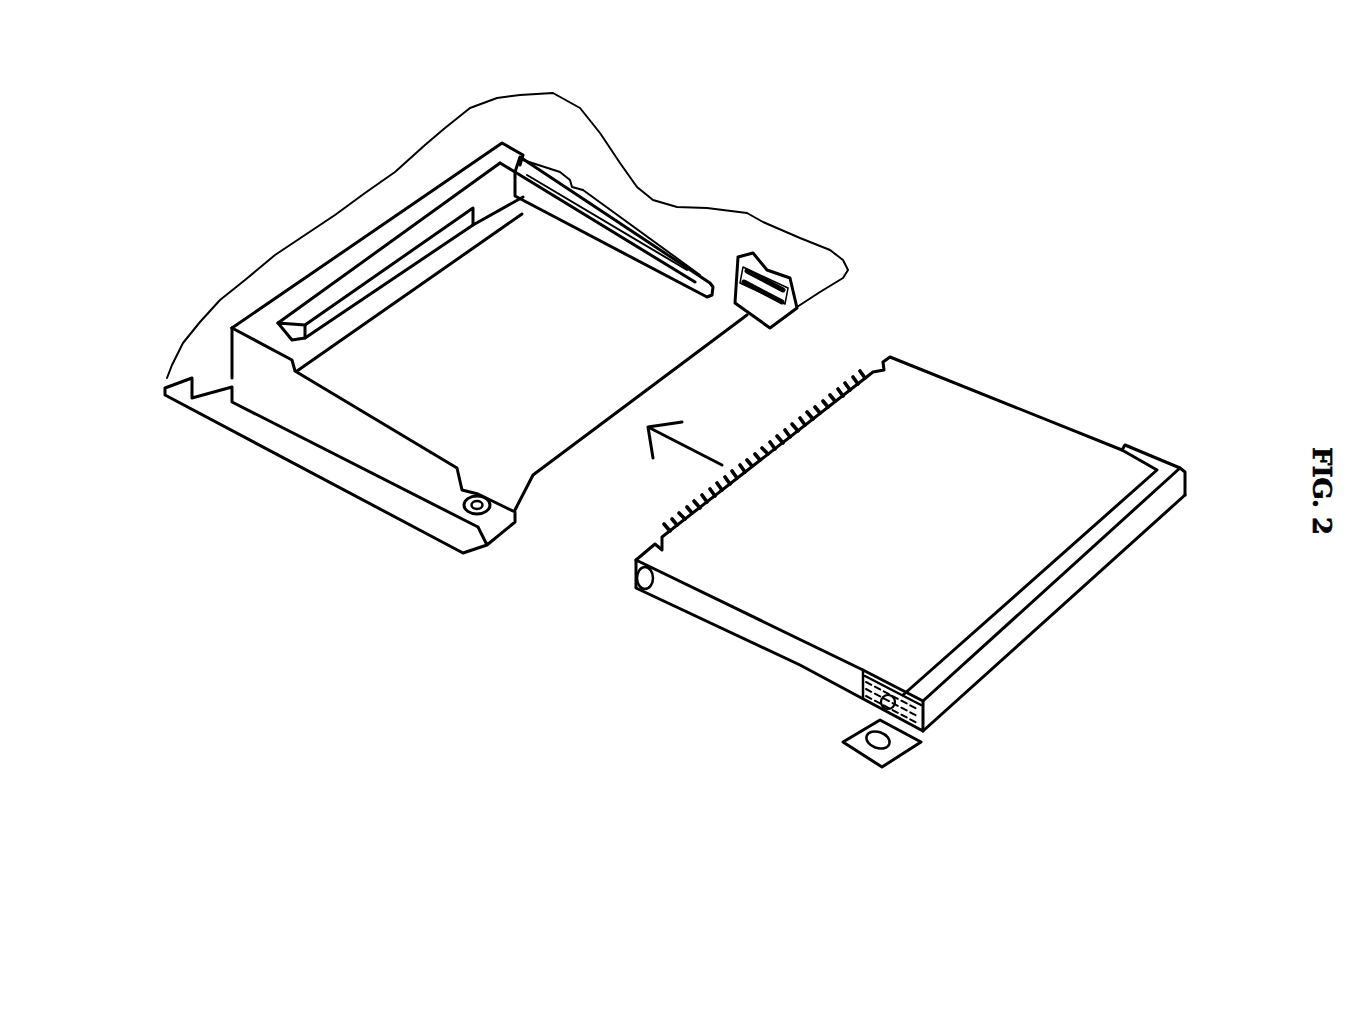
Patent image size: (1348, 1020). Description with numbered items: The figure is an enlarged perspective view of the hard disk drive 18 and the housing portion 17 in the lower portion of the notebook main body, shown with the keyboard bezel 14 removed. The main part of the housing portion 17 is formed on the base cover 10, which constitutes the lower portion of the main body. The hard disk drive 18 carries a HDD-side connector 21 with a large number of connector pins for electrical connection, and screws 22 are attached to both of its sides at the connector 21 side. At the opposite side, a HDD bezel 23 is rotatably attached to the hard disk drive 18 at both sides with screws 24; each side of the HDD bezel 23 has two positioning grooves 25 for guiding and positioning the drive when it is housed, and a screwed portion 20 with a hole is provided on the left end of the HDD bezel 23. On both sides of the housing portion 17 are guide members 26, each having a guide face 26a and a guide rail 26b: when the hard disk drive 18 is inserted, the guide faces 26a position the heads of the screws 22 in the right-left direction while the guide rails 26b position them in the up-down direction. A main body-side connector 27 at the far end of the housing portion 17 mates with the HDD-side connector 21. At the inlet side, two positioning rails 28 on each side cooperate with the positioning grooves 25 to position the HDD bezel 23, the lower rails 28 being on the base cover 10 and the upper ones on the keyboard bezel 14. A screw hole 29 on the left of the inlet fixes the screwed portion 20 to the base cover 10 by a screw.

The base cover 10 is at (390, 497).
The keyboard bezel 14 is at (793, 280).
The housing portion 17 is at (533, 367).
The hard disk drive 18 is at (1000, 400).
The screwed portion 20 is at (897, 755).
The HDD-side connector 21 is at (813, 407).
The screws 22 is at (633, 588).
The HDD bezel 23 is at (1100, 560).
The screws 24 is at (877, 705).
The positioning grooves 25 is at (868, 705).
The guide members 26 is at (683, 235).
The guide face 26a is at (640, 228).
The guide rail 26b is at (583, 208).
The main body-side connector 27 is at (350, 302).
The positioning rails 28 is at (760, 302).
The screw hole 29 is at (462, 516).